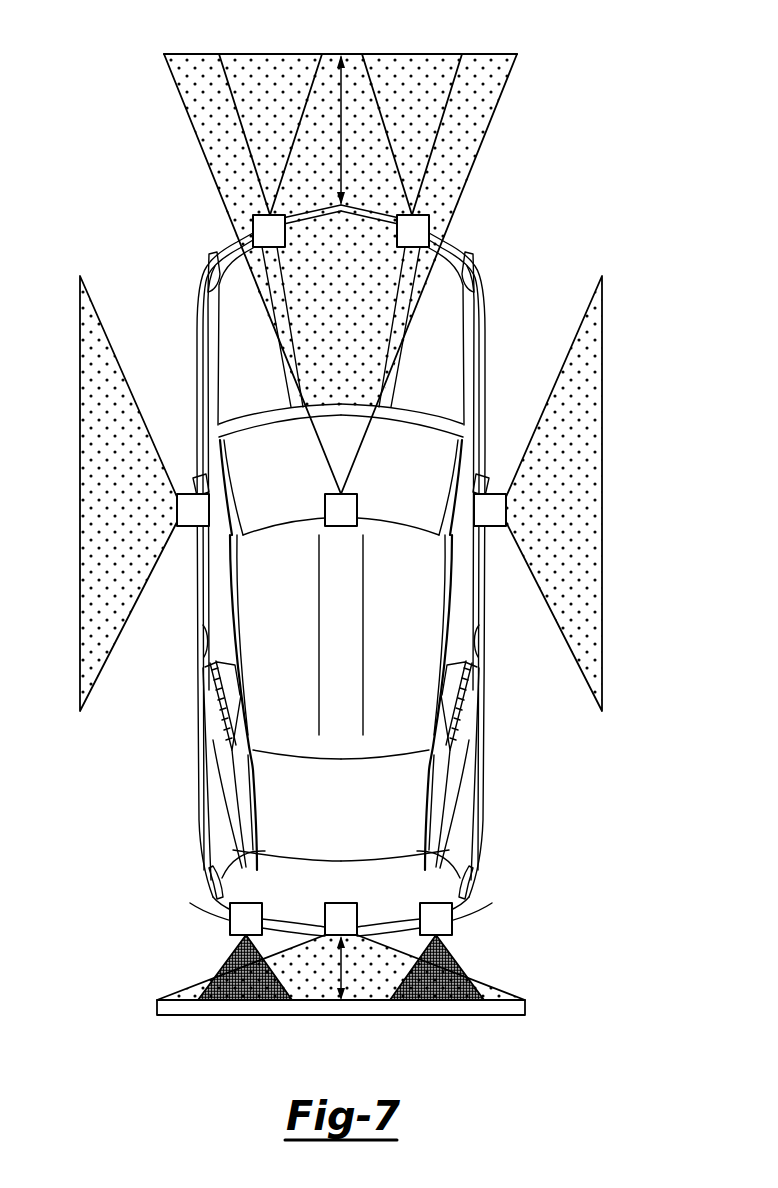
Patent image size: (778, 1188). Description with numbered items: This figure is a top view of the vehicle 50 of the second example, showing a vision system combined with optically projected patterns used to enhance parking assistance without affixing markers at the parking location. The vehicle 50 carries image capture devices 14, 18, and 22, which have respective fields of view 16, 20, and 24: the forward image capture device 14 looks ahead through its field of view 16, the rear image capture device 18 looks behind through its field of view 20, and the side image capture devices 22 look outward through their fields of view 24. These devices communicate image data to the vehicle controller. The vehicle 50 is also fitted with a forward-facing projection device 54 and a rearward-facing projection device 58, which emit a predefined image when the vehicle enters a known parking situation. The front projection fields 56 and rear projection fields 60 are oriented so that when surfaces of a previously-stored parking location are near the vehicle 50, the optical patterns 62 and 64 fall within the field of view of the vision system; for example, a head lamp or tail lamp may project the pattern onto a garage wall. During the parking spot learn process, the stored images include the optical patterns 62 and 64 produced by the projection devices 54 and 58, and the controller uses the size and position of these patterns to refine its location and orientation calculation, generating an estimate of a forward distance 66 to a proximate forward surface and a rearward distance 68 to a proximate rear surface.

The image capture device 14 is at (324, 509).
The field of view 16 is at (216, 183).
The image capture device 18 is at (334, 903).
The field of view 20 is at (172, 995).
The image capture device 22 is at (181, 493).
The field of view 24 is at (100, 313).
The vehicle 50 is at (437, 363).
The forward-facing projection device 54 is at (253, 222).
The front projection field 56 is at (227, 89).
The rearward-facing projection device 58 is at (230, 915).
The rear projection field 60 is at (226, 962).
The optical pattern 62 is at (253, 54).
The optical pattern 64 is at (223, 1000).
The forward distance 66 is at (341, 128).
The rearward distance 68 is at (367, 1000).